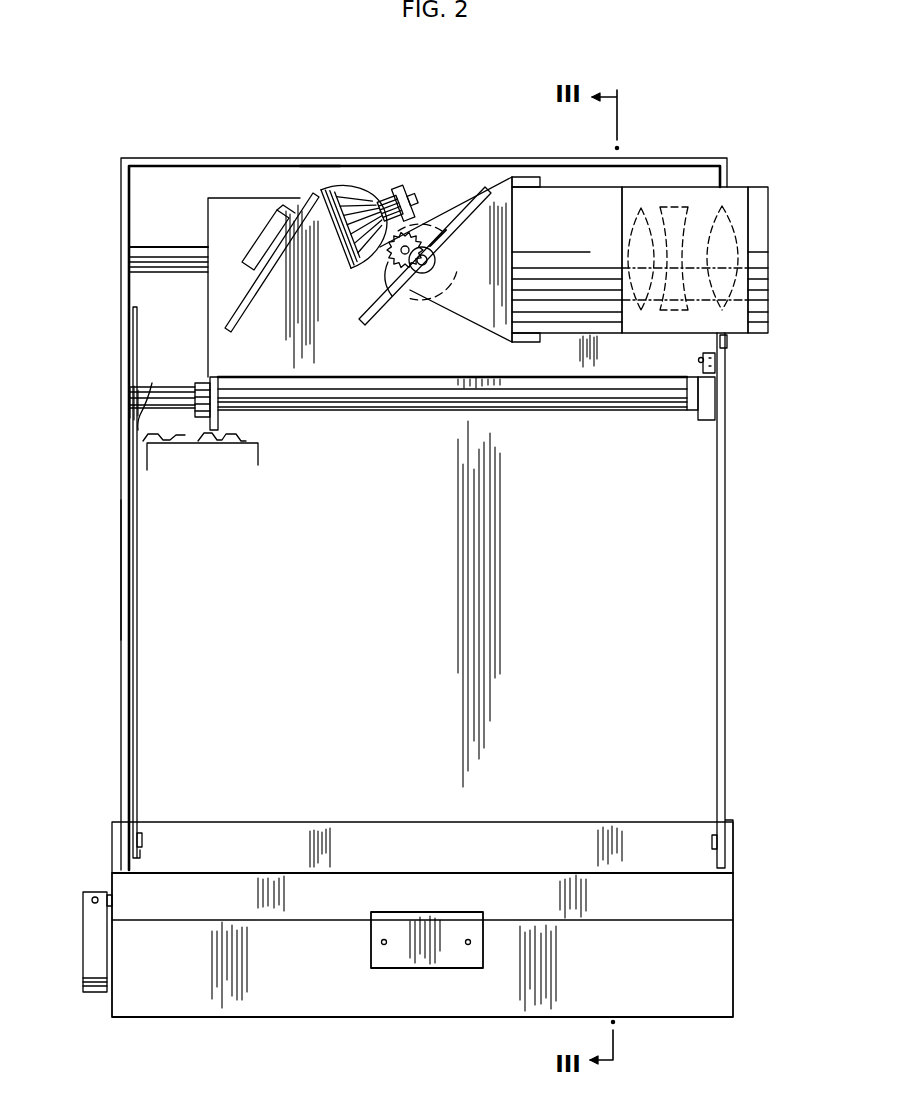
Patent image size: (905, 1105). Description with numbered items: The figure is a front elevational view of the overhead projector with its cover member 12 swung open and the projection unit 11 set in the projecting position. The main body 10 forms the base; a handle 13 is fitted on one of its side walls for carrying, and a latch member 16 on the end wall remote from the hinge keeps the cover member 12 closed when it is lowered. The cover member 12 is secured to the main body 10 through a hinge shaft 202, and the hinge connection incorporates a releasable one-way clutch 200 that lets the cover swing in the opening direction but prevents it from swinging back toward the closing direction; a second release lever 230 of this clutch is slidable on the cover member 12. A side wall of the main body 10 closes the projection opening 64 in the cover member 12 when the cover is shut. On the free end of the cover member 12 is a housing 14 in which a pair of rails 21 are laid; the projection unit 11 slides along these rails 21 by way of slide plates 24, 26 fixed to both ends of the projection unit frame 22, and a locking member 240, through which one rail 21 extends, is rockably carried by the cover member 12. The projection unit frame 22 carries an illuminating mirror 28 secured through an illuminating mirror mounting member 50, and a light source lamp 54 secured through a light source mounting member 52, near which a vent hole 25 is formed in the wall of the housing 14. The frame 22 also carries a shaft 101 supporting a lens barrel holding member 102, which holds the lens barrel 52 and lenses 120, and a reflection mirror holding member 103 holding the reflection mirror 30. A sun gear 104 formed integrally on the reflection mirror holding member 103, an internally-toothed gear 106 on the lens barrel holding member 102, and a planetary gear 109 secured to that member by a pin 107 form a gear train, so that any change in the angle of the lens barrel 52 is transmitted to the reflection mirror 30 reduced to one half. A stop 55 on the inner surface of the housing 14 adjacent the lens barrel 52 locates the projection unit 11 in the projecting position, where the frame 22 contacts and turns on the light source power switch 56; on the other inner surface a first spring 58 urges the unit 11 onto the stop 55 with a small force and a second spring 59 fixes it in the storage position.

The main body 10 is at (713, 953).
The projection unit 11 is at (425, 200).
The cover member 12 is at (120, 565).
The handle 13 is at (90, 965).
The housing 14 is at (118, 154).
The latch member 16 is at (462, 912).
The rails 21 is at (170, 257).
The projection unit frame 22 is at (217, 350).
The slide plate 24 is at (220, 422).
The vent hole 25 is at (307, 164).
The slide plate 26 is at (690, 410).
The illuminating mirror 28 is at (308, 197).
The reflection mirror 30 is at (487, 182).
The illuminating mirror mounting member 50 is at (254, 262).
The lens barrel 52 is at (408, 195).
The light source lamp 54 is at (352, 205).
The stop 55 is at (708, 410).
The light source power switch 56 is at (715, 365).
The first spring 58 is at (217, 440).
The second spring 59 is at (160, 440).
The projection opening 64 is at (724, 340).
The shaft 101 is at (443, 287).
The lens barrel holding member 102 is at (500, 193).
The reflection mirror holding member 103 is at (440, 238).
The sun gear 104 is at (432, 262).
The internally-toothed gear 106 is at (390, 250).
The pin 107 is at (407, 290).
The planetary gear 109 is at (407, 242).
The lens 120 is at (722, 210).
The one-way clutch 200 is at (112, 862).
The hinge shaft 202 is at (143, 843).
The second release lever 230 is at (137, 650).
The locking member 240 is at (145, 385).